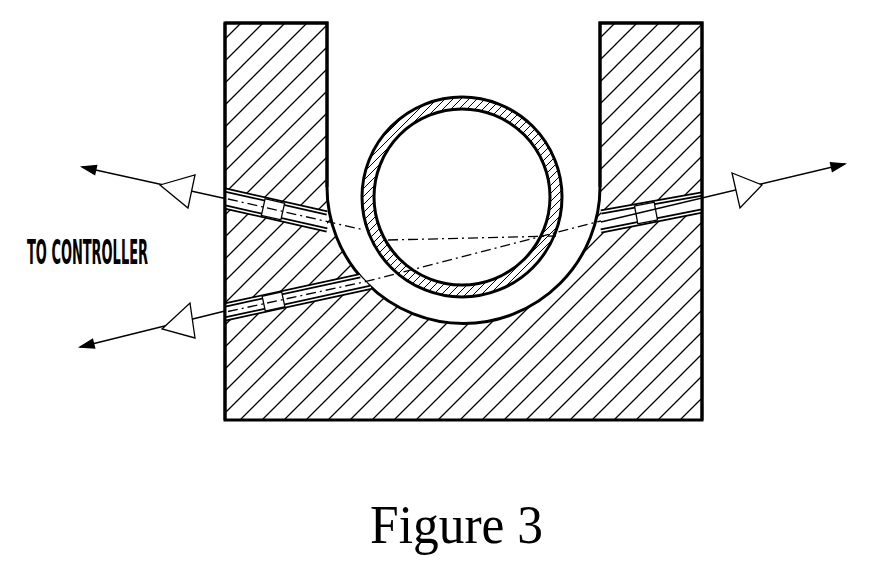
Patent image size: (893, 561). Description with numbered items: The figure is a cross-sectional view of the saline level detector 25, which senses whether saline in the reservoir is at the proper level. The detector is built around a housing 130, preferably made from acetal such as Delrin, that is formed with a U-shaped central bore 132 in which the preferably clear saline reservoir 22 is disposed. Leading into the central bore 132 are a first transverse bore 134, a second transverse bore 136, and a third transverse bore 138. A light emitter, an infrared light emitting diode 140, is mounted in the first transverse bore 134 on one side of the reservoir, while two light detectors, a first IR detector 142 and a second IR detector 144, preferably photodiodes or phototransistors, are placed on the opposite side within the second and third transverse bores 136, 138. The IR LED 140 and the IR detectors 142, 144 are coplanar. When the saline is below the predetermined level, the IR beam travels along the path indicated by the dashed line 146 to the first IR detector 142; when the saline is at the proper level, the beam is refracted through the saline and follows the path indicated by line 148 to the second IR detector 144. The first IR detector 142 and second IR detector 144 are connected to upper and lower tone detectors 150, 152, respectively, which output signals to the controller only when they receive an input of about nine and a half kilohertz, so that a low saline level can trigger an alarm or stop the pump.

The saline level detector 25 is at (168, 80).
The saline reservoir 22 is at (487, 97).
The housing 130 is at (622, 402).
The central bore 132 is at (329, 53).
The first transverse bore 134 is at (702, 194).
The second transverse bore 136 is at (227, 318).
The third transverse bore 138 is at (226, 199).
The infrared light emitting diode 140 is at (650, 218).
The first IR detector 142 is at (265, 293).
The second IR detector 144 is at (272, 190).
The dashed line 146 is at (362, 280).
The line 148 is at (345, 222).
The upper tone detector 150 is at (175, 313).
The lower tone detector 152 is at (174, 180).